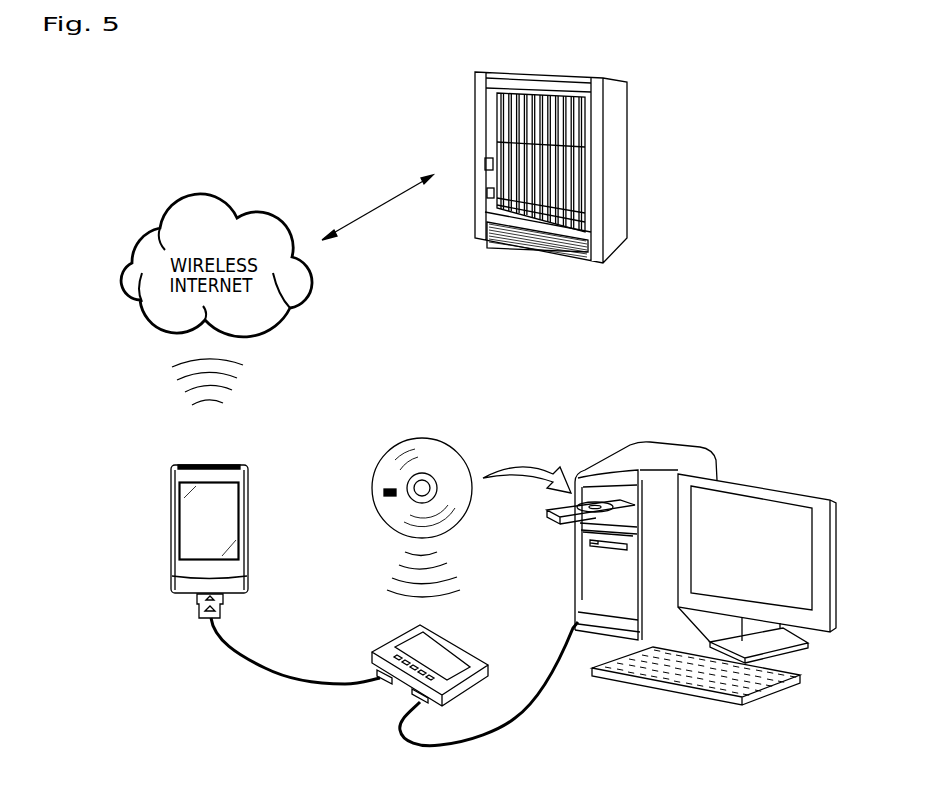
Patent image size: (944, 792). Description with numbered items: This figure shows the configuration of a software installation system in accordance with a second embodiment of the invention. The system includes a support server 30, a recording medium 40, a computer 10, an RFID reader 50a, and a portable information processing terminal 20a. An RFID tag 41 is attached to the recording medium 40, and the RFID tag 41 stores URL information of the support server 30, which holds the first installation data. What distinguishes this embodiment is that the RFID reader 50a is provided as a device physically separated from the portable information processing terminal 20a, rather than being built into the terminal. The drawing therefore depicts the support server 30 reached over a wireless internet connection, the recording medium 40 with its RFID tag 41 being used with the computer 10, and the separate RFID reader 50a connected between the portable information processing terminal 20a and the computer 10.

The computer 10 is at (790, 437).
The portable information processing terminal 20a is at (173, 530).
The support server 30 is at (628, 157).
The recording medium 40 is at (452, 446).
The RFID tag 41 is at (390, 497).
The RFID reader 50a is at (384, 644).